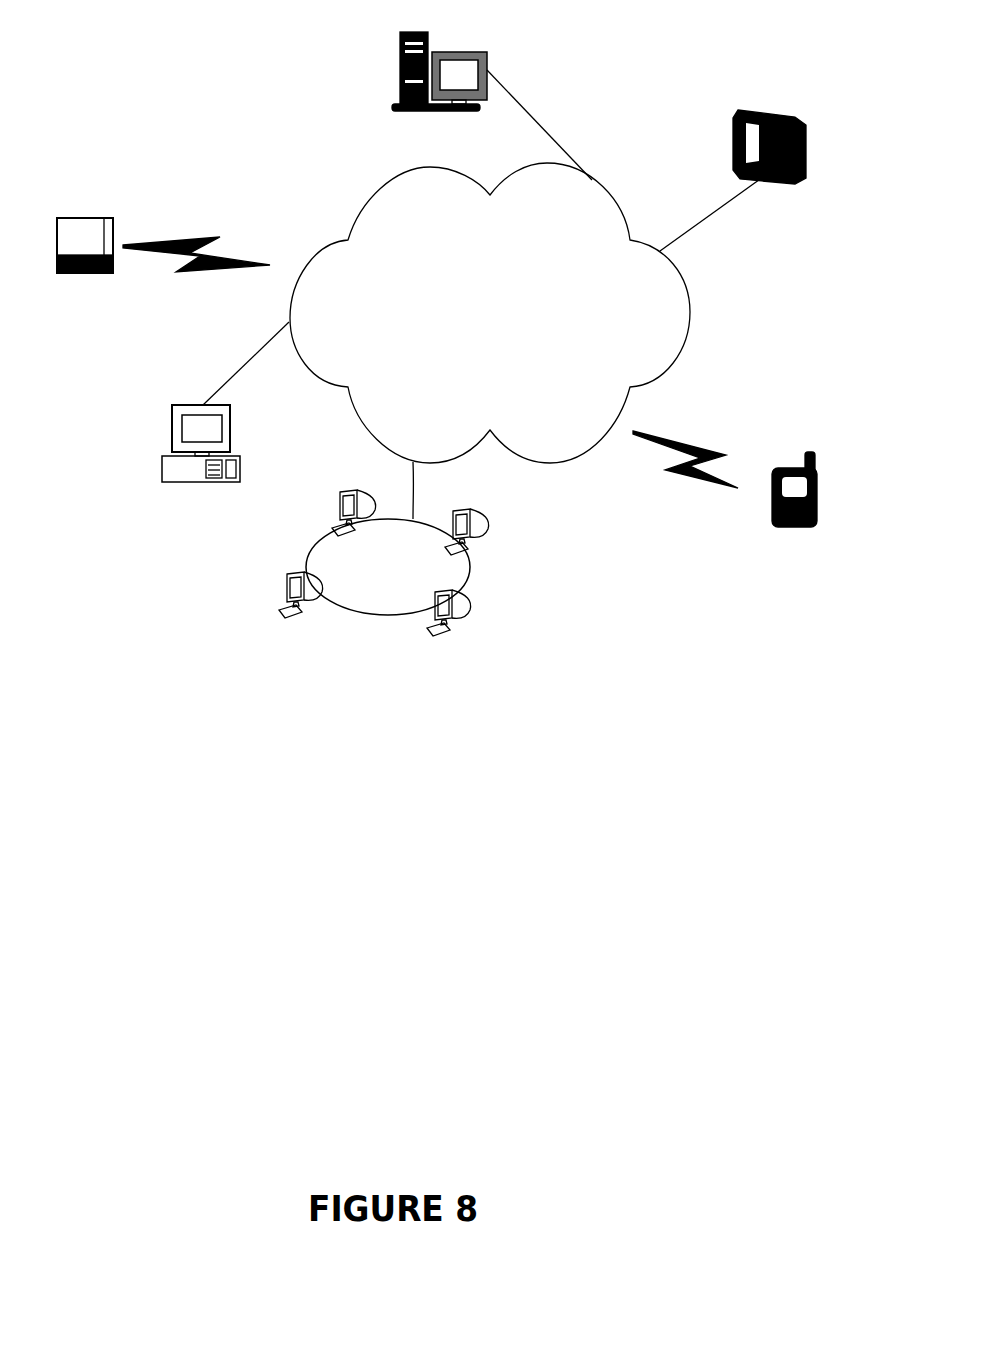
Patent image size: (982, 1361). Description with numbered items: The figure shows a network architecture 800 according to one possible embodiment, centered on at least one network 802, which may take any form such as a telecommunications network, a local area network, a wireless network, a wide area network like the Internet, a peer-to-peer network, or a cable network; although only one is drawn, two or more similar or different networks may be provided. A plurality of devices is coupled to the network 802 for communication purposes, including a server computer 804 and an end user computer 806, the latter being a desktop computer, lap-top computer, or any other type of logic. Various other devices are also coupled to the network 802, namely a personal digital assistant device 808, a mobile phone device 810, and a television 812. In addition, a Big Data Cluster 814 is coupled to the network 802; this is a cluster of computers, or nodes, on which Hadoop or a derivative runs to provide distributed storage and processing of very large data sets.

The network architecture 800 is at (399, 750).
The network 802 is at (547, 463).
The server computer 804 is at (398, 70).
The end user computer 806 is at (162, 460).
The personal digital assistant (PDA) device 808 is at (86, 218).
The mobile phone device 810 is at (770, 470).
The television 812 is at (748, 102).
The Big Data Cluster 814 is at (383, 615).